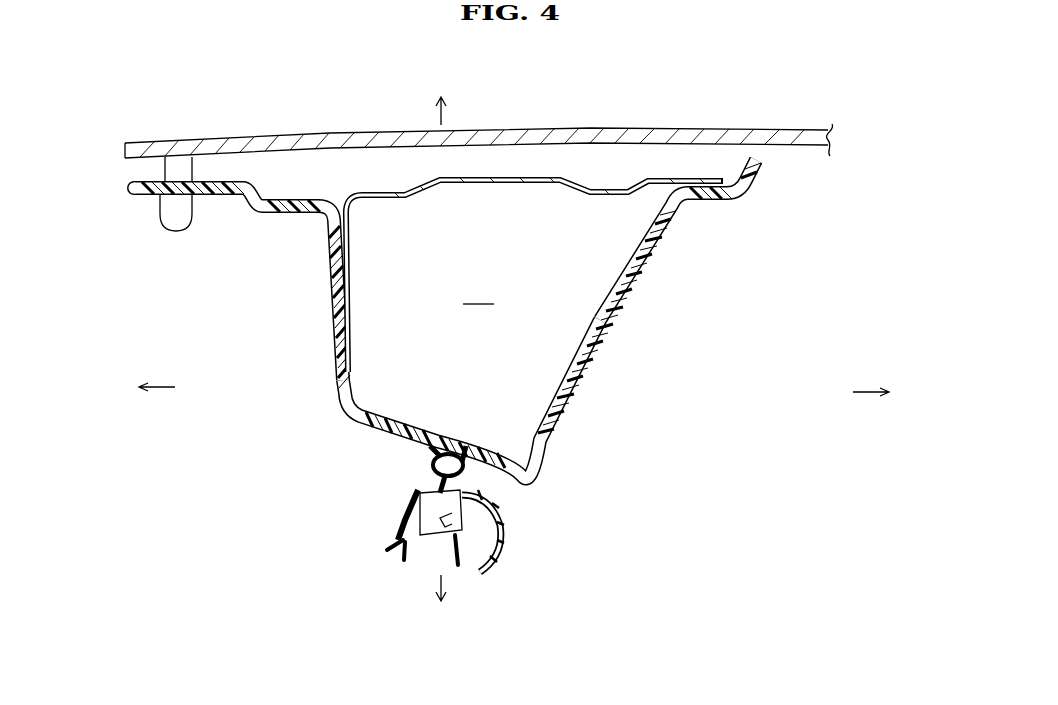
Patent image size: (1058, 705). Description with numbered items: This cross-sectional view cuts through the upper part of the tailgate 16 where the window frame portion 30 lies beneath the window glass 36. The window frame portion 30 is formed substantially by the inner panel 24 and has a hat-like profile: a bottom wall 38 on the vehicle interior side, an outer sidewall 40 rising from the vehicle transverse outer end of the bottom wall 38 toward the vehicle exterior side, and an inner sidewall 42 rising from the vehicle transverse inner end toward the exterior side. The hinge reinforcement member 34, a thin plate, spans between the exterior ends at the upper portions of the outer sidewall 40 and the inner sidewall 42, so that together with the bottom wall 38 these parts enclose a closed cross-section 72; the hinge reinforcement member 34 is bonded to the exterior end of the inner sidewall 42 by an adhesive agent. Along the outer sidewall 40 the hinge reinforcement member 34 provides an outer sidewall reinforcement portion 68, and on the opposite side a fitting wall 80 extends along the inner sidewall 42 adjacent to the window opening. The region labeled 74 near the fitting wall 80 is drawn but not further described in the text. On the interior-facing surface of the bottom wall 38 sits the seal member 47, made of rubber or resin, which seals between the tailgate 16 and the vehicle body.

The tailgate 16 is at (507, 152).
The window glass 36 is at (303, 130).
The hinge reinforcement member 34 is at (458, 204).
The outer sidewall reinforcement portion 68 is at (330, 268).
The end portion of hinge reinforcement member 74 is at (753, 172).
The fitting wall 80 is at (753, 176).
The closed cross-section 72 is at (509, 334).
The window frame portion 30 is at (512, 352).
The inner panel 24 is at (463, 352).
The outer sidewall 40 is at (340, 345).
The inner sidewall 42 is at (604, 362).
The bottom wall 38 is at (407, 435).
The seal member 47 is at (517, 557).